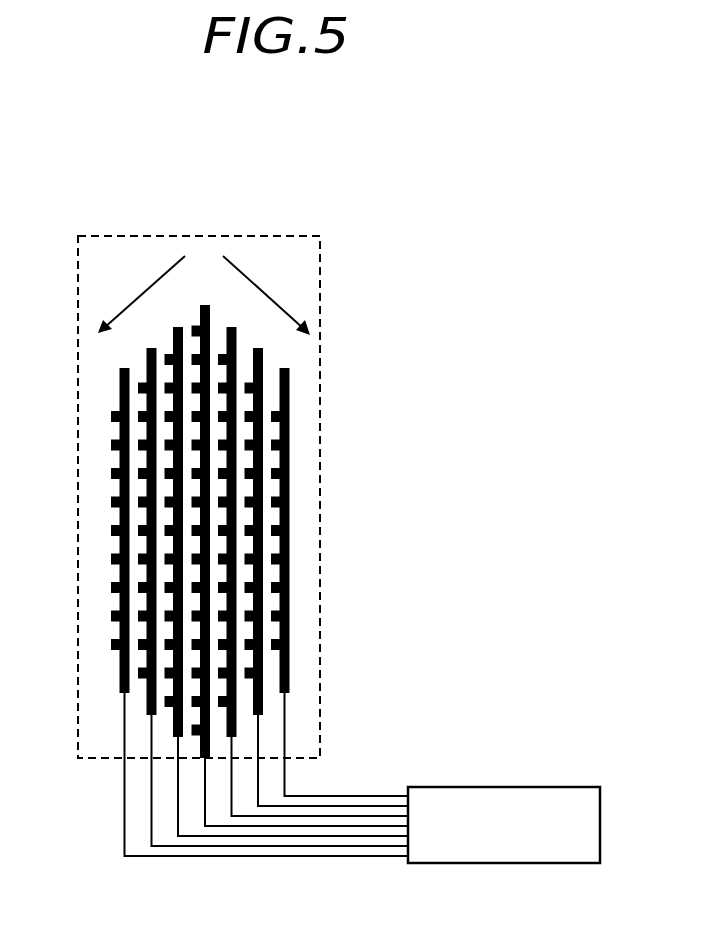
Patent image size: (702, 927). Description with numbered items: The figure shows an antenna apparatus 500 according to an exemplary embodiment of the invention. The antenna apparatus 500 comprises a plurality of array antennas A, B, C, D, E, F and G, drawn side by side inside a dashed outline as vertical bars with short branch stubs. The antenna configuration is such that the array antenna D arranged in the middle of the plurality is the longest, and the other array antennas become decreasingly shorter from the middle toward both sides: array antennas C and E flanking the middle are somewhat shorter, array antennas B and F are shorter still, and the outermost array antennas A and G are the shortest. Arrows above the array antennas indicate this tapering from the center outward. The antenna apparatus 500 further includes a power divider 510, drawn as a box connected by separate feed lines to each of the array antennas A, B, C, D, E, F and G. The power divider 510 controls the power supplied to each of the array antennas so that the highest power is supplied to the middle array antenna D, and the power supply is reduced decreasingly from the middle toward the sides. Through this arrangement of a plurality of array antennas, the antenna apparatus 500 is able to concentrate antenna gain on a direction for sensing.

The antenna apparatus 500 is at (10, 222).
The power divider 510 is at (505, 787).
The array antenna A is at (259, 597).
The array antenna B is at (272, 583).
The array antenna C is at (286, 564).
The array antenna D is at (300, 552).
The array antenna E is at (312, 554).
The array antenna F is at (326, 564).
The array antenna G is at (339, 568).